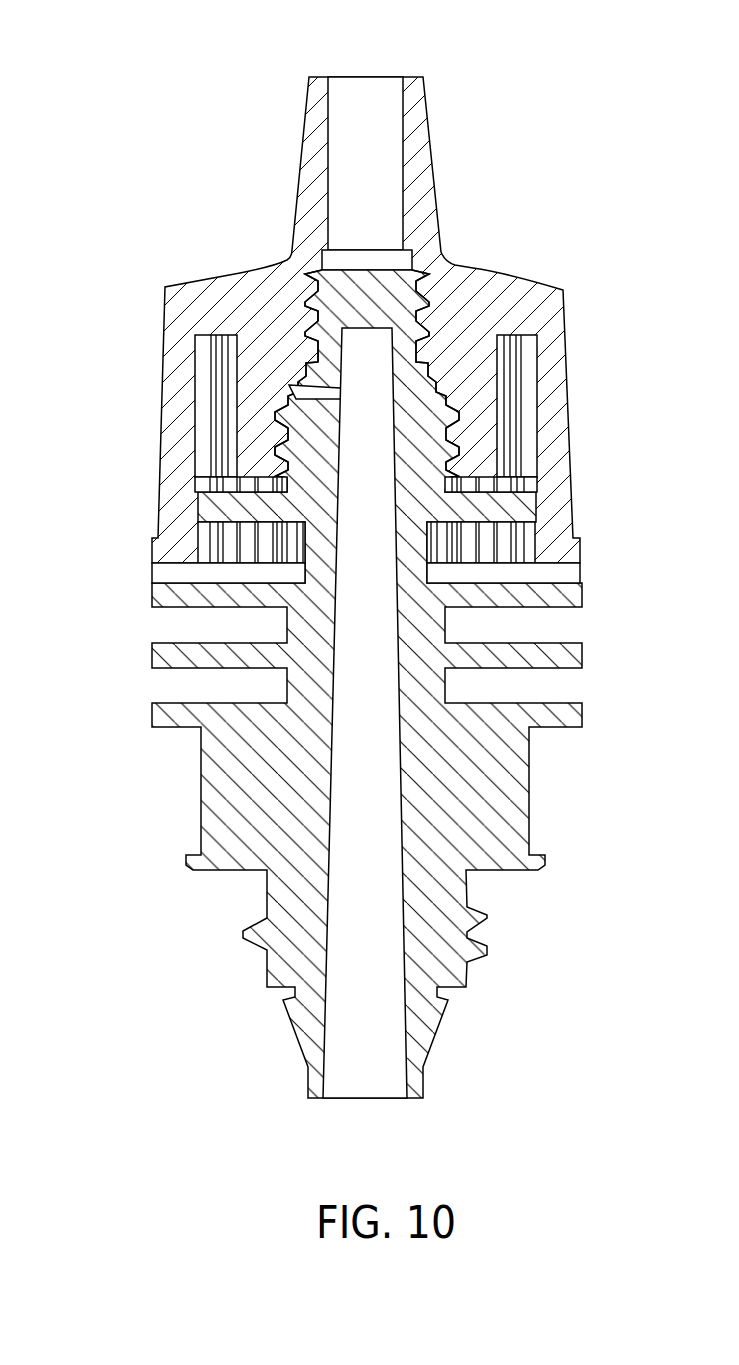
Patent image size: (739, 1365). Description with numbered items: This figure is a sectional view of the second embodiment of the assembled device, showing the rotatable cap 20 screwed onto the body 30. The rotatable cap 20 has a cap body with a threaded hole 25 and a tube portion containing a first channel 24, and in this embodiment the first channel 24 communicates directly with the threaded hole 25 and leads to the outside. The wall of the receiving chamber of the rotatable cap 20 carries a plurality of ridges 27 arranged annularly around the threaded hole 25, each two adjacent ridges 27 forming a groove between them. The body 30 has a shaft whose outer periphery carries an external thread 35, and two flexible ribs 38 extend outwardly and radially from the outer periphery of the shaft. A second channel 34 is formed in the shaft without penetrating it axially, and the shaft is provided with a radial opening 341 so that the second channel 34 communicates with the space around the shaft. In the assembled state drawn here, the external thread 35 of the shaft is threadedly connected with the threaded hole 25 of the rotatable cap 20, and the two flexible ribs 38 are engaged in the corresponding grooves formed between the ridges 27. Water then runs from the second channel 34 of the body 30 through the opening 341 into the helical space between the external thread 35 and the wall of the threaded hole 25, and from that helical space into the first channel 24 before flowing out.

The rotatable cap 20 is at (534, 272).
The first channel 24 is at (365, 105).
The threaded hole 25 is at (316, 350).
The ridges 27 is at (202, 553).
The body 30 is at (532, 822).
The second channel 34 is at (380, 950).
The opening 341 is at (296, 418).
The external thread 35 is at (463, 442).
The flexible ribs 38 is at (513, 511).